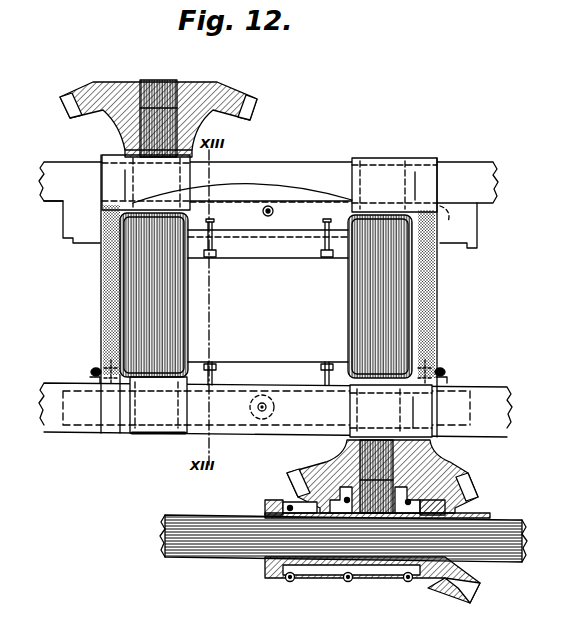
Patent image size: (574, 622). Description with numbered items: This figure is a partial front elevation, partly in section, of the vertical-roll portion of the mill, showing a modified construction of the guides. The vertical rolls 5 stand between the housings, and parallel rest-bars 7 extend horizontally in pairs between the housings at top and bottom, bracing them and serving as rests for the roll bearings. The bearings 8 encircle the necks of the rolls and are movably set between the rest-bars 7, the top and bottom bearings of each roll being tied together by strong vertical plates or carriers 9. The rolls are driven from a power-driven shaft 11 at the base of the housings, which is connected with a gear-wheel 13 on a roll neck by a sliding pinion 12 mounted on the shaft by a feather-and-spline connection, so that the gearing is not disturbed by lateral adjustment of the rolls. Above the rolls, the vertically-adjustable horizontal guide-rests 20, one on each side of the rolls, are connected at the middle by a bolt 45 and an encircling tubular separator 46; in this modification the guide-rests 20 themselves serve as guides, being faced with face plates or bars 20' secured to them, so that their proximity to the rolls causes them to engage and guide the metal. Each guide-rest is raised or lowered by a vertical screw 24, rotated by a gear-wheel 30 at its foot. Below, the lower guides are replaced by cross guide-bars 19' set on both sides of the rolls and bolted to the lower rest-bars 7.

The vertical rolls 5 is at (266, 295).
The rest-bars 7 is at (275, 299).
The bearings 8 is at (269, 296).
The vertical plates or carriers 9 is at (447, 286).
The power-driven shaft 11 is at (210, 546).
The sliding pinion 12 is at (455, 586).
The gear-wheel 13 is at (246, 111).
The cross guide-bars 19' is at (268, 373).
The guide-rests 20 is at (260, 216).
The face plates or bars 20' is at (268, 244).
The vertical screw 24 is at (108, 305).
The gear-wheel 30 is at (93, 368).
The bolt 45 is at (274, 212).
The tubular separator 46 is at (268, 238).